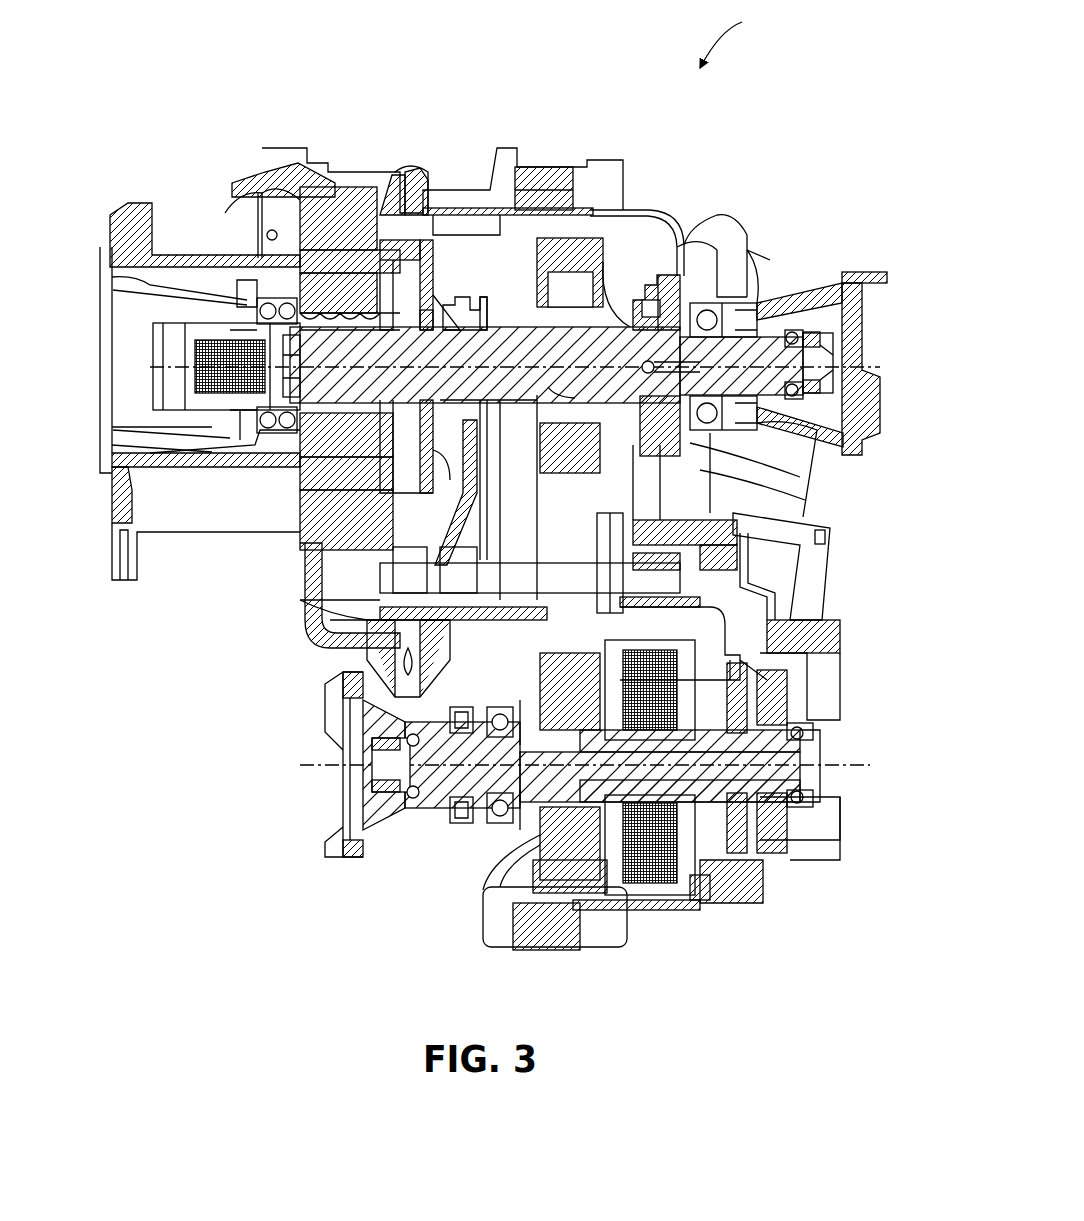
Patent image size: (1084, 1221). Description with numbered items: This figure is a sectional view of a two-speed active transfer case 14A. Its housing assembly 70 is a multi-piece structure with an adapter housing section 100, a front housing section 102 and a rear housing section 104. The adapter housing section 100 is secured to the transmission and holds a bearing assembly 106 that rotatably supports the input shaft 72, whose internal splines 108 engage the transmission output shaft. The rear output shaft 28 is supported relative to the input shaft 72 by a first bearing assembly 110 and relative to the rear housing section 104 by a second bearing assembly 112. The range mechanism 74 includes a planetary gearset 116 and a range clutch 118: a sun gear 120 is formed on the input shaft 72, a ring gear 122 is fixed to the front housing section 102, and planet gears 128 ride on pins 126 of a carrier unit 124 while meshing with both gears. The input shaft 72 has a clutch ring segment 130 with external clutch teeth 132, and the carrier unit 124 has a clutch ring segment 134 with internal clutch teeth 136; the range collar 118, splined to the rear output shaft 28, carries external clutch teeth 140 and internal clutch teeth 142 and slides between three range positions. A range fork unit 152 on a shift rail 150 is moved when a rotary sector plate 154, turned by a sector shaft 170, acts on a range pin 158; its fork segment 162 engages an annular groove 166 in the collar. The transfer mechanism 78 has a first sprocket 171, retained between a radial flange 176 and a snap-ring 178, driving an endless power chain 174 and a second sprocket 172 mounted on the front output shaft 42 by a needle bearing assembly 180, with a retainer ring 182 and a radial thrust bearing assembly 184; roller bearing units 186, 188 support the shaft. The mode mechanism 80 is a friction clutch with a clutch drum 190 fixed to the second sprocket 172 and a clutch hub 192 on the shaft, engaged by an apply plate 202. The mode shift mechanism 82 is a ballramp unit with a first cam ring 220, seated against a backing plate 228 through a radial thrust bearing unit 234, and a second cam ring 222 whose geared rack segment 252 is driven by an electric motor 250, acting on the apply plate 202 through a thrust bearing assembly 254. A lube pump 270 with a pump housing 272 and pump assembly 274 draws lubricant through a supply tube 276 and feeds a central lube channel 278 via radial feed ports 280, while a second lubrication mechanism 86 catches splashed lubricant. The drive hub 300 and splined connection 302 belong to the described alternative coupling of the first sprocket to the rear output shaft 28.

The transfer case 14A is at (739, 40).
The rear output shaft 28 is at (780, 340).
The front output shaft 42 is at (435, 780).
The housing assembly 70 is at (360, 170).
The input shaft 72 is at (212, 325).
The range mechanism 74 is at (470, 232).
The transfer mechanism 78 is at (615, 208).
The mode mechanism 80 is at (632, 905).
The mode shift mechanism 82 is at (815, 690).
The second lubrication mechanism 86 is at (640, 538).
The adapter housing section 100 is at (190, 255).
The front housing section 102 is at (420, 178).
The rear housing section 104 is at (720, 255).
The bearing assembly 106 is at (260, 432).
The internal splines 108 is at (225, 432).
The first bearing assembly 110 is at (340, 370).
The second bearing assembly 112 is at (730, 300).
The planetary gearset 116 is at (300, 545).
The range clutch 118 is at (490, 302).
The sun gear 120 is at (290, 370).
The ring gear 122 is at (320, 190).
The carrier unit 124 is at (383, 195).
The pins 126 is at (275, 240).
The planet gears 128 is at (300, 510).
The clutch ring segment 130 is at (395, 305).
The external clutch teeth 132 is at (398, 440).
The clutch ring segment 134 is at (410, 172).
The internal clutch teeth 136 is at (437, 240).
The external clutch teeth 140 is at (445, 490).
The internal clutch teeth 142 is at (433, 325).
The shift rail 150 is at (528, 570).
The range fork unit 152 is at (460, 555).
The rotary sector plate 154 is at (525, 605).
The range pin 158 is at (375, 645).
The fork segment 162 is at (480, 480).
The annular groove 166 is at (462, 303).
The sector shaft 170 is at (395, 660).
The first sprocket 171 is at (575, 250).
The second sprocket 172 is at (520, 880).
The endless power chain 174 is at (577, 920).
The radial flange 176 is at (540, 300).
The snap-ring 178 is at (595, 290).
The needle bearing assembly 180 is at (548, 775).
The retainer ring 182 is at (495, 815).
The radial thrust bearing assembly 184 is at (575, 700).
The roller bearing unit 186 is at (503, 715).
The roller bearing unit 188 is at (812, 733).
The clutch drum 190 is at (648, 912).
The clutch hub 192 is at (668, 750).
The apply plate 202 is at (695, 900).
The first cam ring 220 is at (770, 870).
The second cam ring 222 is at (733, 860).
The backing plate 228 is at (790, 830).
The radial thrust bearing unit 234 is at (790, 700).
The electric motor 250 is at (800, 453).
The geared rack segment 252 is at (715, 640).
The thrust bearing assembly 254 is at (780, 640).
The lube pump 270 is at (750, 258).
The pump housing 272 is at (705, 250).
The pump assembly 274 is at (800, 490).
The supply tube 276 is at (805, 517).
The central lube channel 278 is at (583, 384).
The radial feed ports 280 is at (648, 360).
The drive hub 300 is at (600, 590).
The splined connection 302 is at (748, 595).